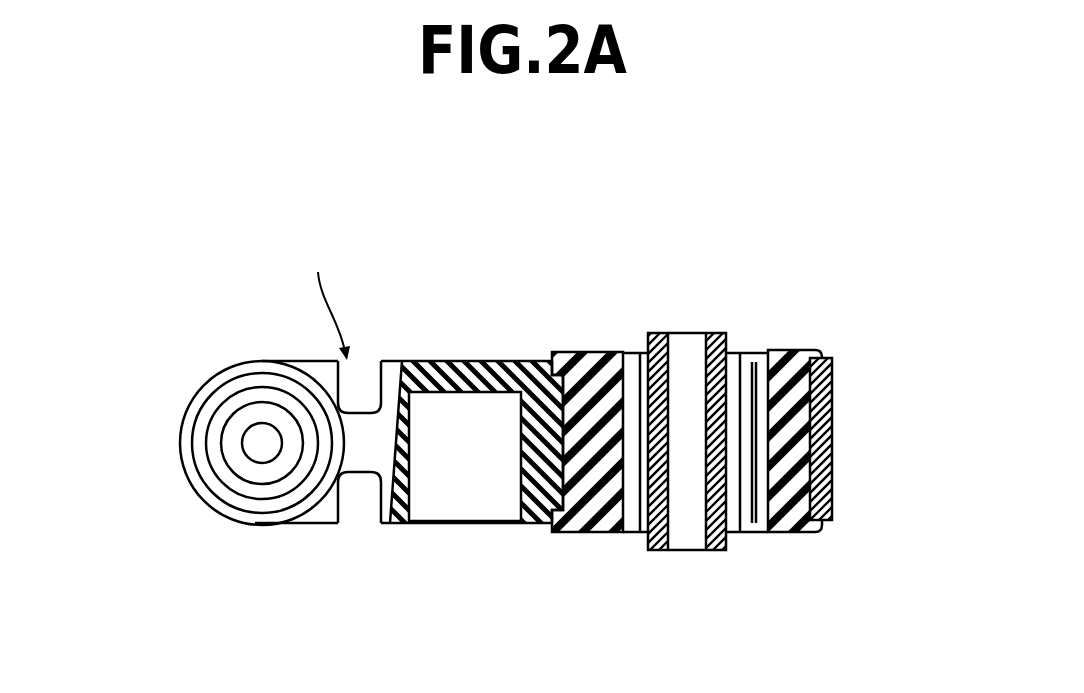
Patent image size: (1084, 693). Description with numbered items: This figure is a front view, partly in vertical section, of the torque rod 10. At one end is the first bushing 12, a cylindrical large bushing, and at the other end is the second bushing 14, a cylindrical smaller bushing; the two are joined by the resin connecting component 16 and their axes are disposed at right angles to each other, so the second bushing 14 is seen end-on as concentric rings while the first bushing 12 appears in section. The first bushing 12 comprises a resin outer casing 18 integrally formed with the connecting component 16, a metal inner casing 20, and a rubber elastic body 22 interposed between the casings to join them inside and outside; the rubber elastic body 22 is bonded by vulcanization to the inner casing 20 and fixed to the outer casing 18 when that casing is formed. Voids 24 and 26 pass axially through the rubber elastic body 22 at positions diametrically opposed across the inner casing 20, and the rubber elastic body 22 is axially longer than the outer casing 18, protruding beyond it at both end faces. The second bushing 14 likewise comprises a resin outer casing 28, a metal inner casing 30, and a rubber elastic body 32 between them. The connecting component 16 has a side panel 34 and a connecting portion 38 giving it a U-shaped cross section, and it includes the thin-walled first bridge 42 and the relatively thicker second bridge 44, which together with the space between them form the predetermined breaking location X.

The torque rod 10 is at (476, 268).
The first bushing 12 is at (799, 346).
The second bushing 14 is at (218, 362).
The resin connecting component 16 is at (495, 354).
The resin outer casing 18 is at (833, 398).
The metal inner casing 20 is at (712, 333).
The rubber elastic body 22 is at (597, 358).
The void 24 is at (762, 512).
The void 26 is at (632, 512).
The resin outer casing 28 is at (200, 492).
The metal inner casing 30 is at (233, 427).
The rubber elastic body 32 is at (247, 500).
The side panel 34 is at (460, 503).
The connecting portion 38 is at (455, 362).
The first bridge 42 is at (358, 418).
The second bridge 44 is at (357, 503).